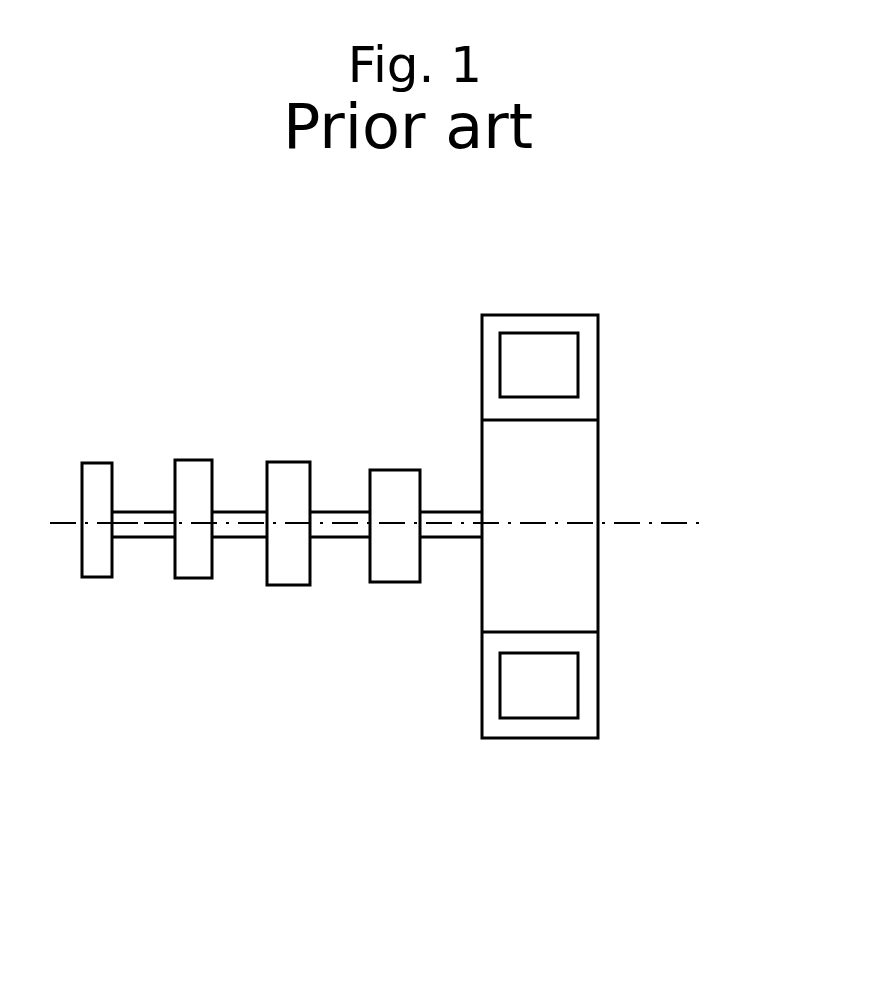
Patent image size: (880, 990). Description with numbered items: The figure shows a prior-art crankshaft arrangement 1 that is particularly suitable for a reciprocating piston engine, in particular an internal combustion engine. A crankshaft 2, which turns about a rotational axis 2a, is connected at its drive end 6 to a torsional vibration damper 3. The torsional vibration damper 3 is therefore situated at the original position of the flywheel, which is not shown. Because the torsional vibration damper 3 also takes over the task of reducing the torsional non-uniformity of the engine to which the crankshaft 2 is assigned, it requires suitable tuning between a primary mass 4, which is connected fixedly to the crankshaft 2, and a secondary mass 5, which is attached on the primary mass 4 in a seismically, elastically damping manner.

The crankshaft arrangement 1 is at (282, 593).
The crankshaft 2 is at (243, 510).
The rotational axis 2a is at (148, 525).
The torsional vibration damper 3 is at (588, 458).
The primary mass 4 is at (565, 581).
The secondary mass 5 is at (557, 692).
The drive end 6 is at (622, 510).